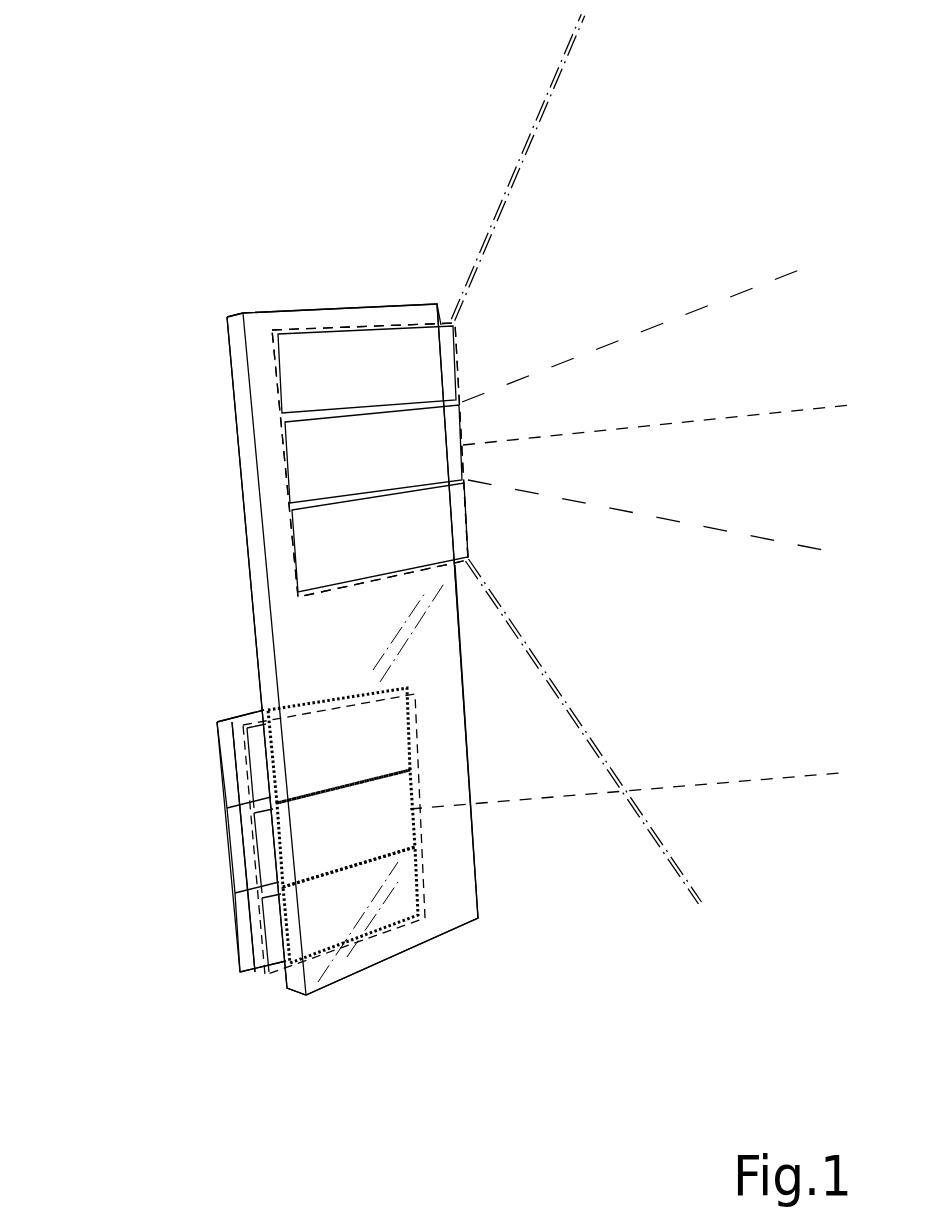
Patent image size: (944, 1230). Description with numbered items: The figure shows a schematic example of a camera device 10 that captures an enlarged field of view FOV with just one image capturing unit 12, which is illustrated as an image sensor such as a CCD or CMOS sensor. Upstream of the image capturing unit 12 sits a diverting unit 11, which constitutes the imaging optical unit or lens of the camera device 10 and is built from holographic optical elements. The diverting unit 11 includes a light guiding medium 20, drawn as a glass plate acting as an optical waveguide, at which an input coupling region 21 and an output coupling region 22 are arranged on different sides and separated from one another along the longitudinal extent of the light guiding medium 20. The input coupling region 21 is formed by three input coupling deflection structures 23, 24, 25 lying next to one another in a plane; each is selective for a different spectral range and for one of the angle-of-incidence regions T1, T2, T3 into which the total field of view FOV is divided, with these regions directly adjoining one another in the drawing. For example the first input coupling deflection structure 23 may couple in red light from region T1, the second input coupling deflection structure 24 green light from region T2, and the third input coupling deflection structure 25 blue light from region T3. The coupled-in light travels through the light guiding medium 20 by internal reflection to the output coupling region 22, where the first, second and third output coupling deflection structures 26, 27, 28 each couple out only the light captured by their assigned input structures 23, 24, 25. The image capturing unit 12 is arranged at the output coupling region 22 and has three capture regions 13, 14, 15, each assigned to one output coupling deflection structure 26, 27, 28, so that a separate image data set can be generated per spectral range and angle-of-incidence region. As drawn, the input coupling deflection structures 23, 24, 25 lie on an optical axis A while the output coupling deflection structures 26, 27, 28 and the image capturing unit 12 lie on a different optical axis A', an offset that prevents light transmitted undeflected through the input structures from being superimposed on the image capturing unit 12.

The camera device 10 is at (170, 268).
The diverting unit 11 is at (382, 973).
The image capturing unit 12 is at (224, 722).
The first capture region 13 is at (234, 777).
The second capture region 14 is at (238, 848).
The third capture region 15 is at (243, 920).
The light guiding medium 20 is at (243, 503).
The input coupling region 21 is at (272, 352).
The output coupling region 22 is at (263, 977).
The first input coupling deflection structure 23 is at (292, 385).
The second input coupling deflection structure 24 is at (295, 456).
The third input coupling deflection structure 25 is at (297, 551).
The first output coupling deflection structure 26 is at (410, 743).
The second output coupling deflection structure 27 is at (412, 809).
The third output coupling deflection structure 28 is at (422, 883).
The first angle-of-incidence region T1 is at (572, 268).
The second angle-of-incidence region T2 is at (588, 393).
The third angle-of-incidence region T3 is at (595, 600).
The optical axis of the input coupling deflection structures A is at (656, 469).
The optical axis of the output coupling deflection structures and image capturing un A' is at (626, 835).
The field of view FOV is at (622, 812).